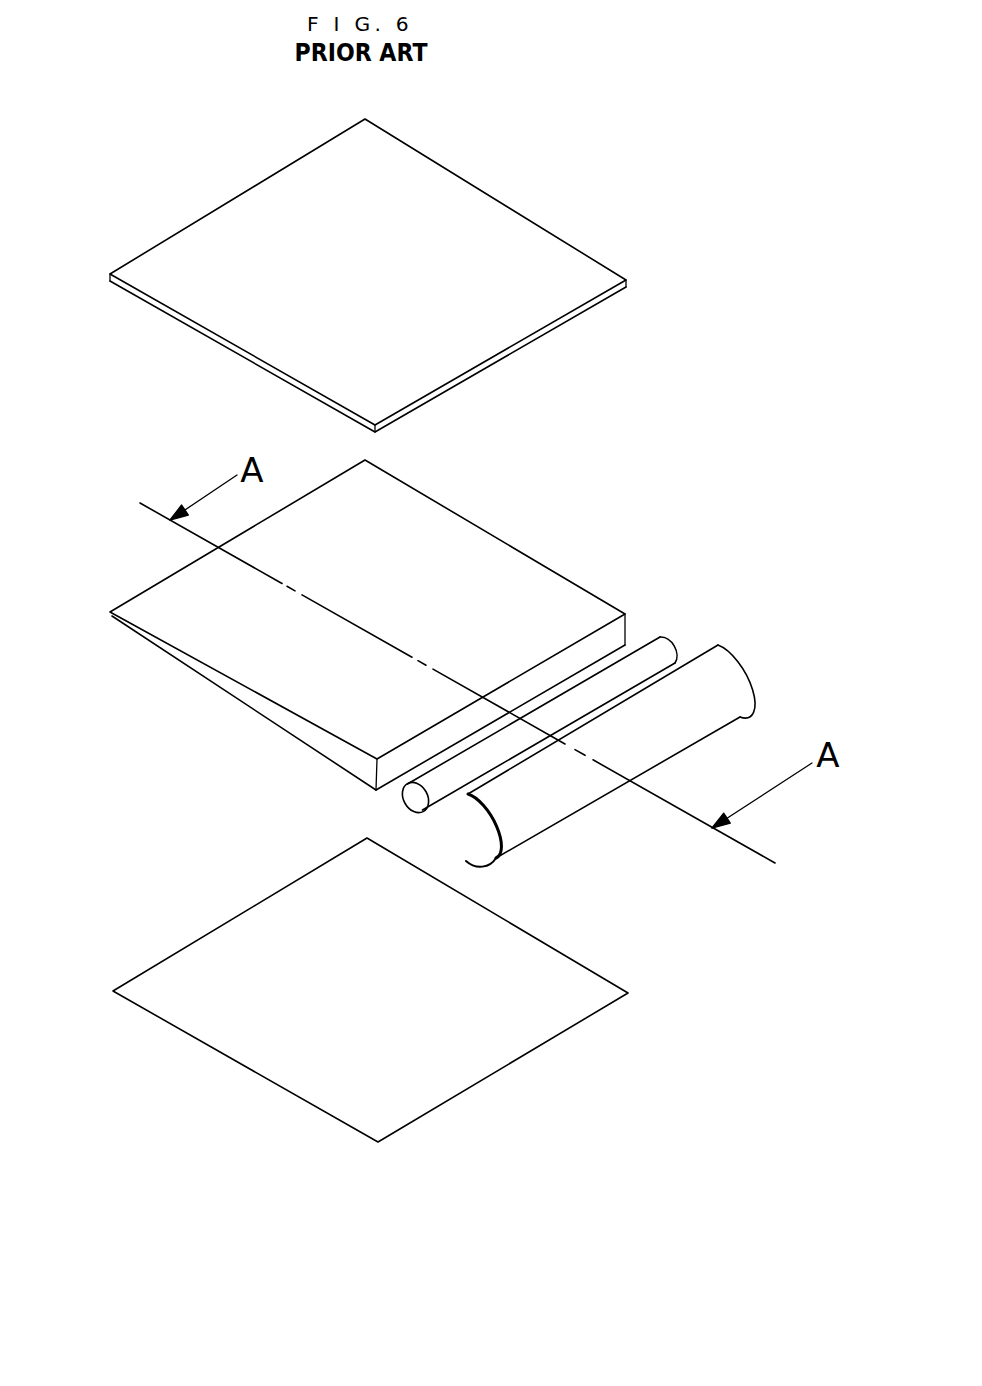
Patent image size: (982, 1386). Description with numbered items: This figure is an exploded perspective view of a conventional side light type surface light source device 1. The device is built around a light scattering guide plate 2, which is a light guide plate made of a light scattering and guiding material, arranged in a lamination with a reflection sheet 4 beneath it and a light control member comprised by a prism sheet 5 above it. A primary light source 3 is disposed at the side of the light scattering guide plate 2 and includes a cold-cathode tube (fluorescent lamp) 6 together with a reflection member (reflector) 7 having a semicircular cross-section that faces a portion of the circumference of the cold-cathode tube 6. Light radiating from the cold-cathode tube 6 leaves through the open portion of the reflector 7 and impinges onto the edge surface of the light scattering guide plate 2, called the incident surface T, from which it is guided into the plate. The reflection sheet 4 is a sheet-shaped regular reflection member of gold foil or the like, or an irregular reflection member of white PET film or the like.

The side light type surface light source device 1 is at (297, 1241).
The light scattering guide plate 2 is at (153, 612).
The primary light source 3 is at (498, 696).
The reflection sheet 4 is at (422, 1105).
The prism sheet 5 is at (498, 340).
The cold-cathode tube 6 is at (445, 787).
The reflection member 7 is at (605, 778).
The incident surface T is at (505, 700).